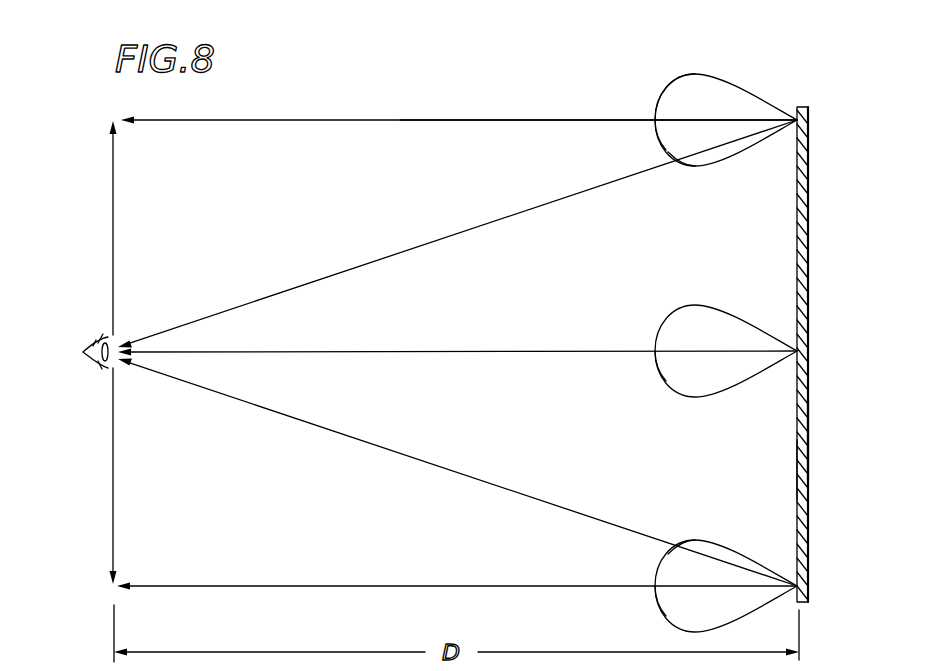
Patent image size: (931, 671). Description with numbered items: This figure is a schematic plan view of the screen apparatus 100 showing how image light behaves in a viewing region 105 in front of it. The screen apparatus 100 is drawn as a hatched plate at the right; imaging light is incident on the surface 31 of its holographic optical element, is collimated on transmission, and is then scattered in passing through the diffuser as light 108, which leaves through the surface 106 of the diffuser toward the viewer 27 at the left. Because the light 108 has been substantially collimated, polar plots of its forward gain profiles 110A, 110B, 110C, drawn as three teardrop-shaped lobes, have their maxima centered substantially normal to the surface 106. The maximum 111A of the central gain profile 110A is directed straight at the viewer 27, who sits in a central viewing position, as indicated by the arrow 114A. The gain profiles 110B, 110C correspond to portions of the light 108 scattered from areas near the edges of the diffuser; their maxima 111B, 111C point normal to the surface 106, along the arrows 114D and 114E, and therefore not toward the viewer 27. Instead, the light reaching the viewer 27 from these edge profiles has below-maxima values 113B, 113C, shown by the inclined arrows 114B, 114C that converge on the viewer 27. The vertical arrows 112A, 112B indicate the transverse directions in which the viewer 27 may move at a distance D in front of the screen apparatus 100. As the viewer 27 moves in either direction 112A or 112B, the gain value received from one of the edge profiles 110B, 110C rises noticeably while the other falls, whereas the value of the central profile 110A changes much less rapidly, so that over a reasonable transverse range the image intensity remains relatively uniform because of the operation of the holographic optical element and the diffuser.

The viewer 27 is at (100, 340).
The surface of the HOE 31 is at (810, 440).
The screen apparatus 100 is at (810, 132).
The region 105 is at (379, 112).
The surface of the diffuser 106 is at (797, 463).
The imaging light 108 is at (660, 60).
The forward gain profile 110A is at (700, 305).
The forward gain profile 110B is at (712, 73).
The forward gain profile 110C is at (735, 541).
The gain profile maximum 111A is at (655, 355).
The gain profile maximum 111B is at (655, 127).
The gain profile maximum 111C is at (655, 590).
The direction 112A is at (112, 220).
The direction 112B is at (112, 463).
The below-maxima value 113B is at (680, 158).
The below-maxima value 113C is at (677, 540).
The arrow 114A is at (509, 349).
The arrow 114B is at (475, 223).
The arrow 114C is at (470, 471).
The arrow 114D is at (475, 118).
The arrow 114E is at (497, 584).